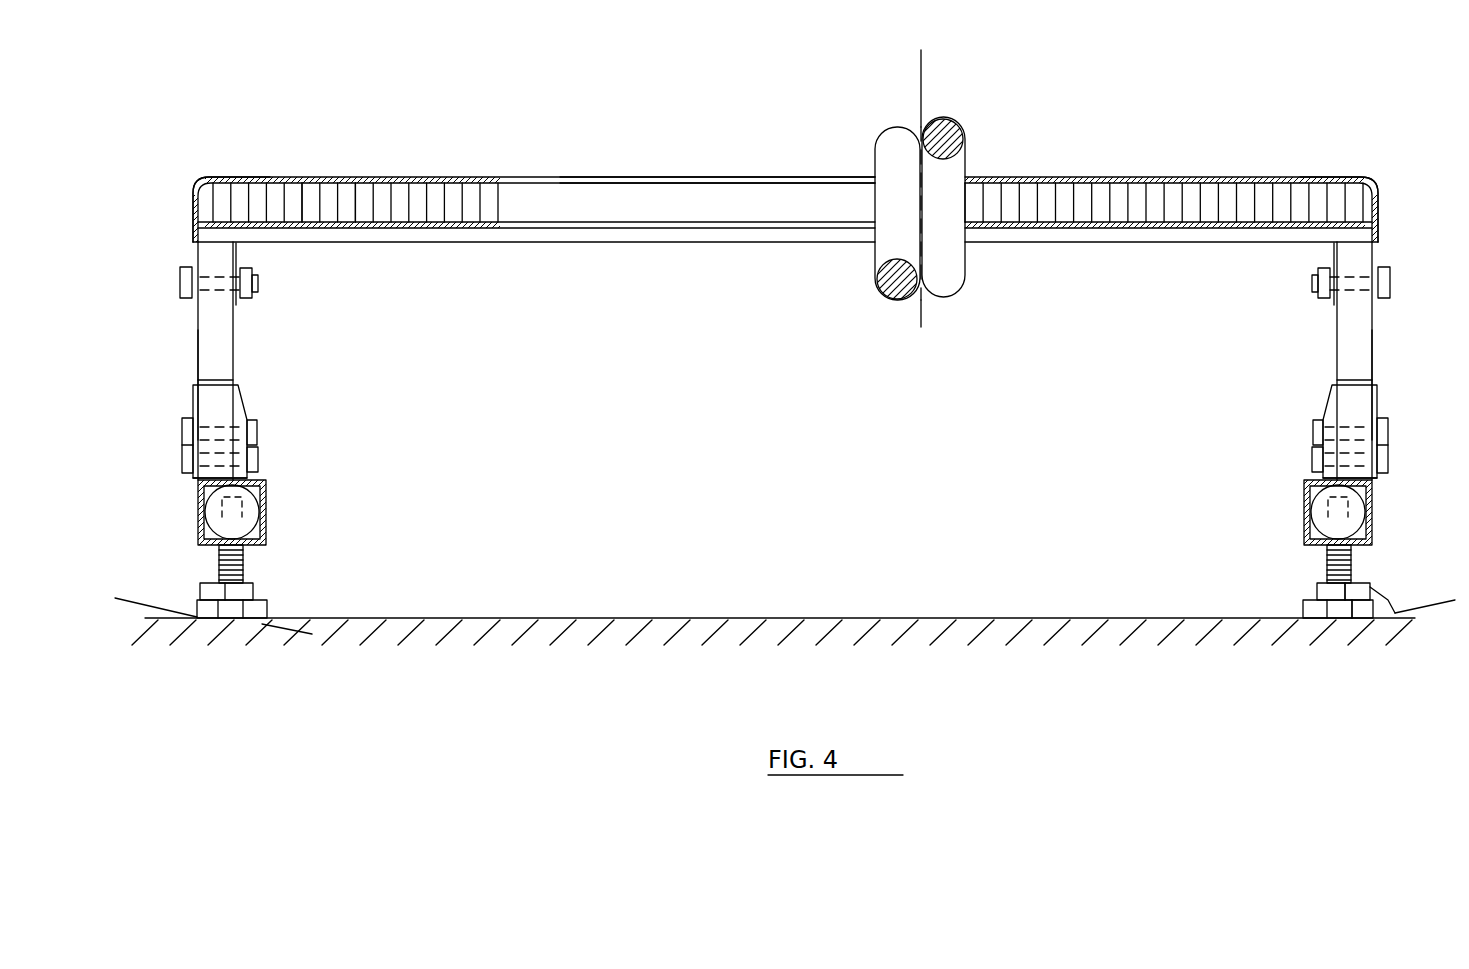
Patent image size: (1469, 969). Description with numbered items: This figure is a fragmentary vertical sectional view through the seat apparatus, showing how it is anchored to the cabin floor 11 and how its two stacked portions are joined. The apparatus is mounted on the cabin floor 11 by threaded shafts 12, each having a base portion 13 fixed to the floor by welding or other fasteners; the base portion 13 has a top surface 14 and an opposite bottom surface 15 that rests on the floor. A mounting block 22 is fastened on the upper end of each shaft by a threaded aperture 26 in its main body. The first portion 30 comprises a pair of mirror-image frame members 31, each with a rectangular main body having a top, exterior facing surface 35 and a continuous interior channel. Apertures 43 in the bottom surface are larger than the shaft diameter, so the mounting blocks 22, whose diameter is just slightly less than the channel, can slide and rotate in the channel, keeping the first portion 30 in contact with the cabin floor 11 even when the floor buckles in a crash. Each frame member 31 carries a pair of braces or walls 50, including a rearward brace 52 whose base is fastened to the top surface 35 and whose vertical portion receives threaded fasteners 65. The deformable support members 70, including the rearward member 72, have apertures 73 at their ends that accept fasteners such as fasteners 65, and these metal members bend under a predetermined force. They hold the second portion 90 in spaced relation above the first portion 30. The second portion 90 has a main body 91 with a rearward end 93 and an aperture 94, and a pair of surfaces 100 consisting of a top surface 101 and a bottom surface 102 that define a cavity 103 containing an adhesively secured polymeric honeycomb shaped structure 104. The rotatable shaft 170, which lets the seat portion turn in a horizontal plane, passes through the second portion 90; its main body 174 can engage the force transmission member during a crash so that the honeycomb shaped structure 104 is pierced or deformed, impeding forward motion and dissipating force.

The cabin floor 11 is at (787, 618).
The threaded shaft 12 is at (1330, 570).
The base portion 13 is at (267, 598).
The top surface 14 is at (1360, 586).
The bottom surface 15 is at (1357, 620).
The mounting block 22 is at (247, 508).
The threaded aperture 26 is at (267, 517).
The first portion 30 is at (288, 475).
The frame member 31 is at (200, 507).
The top, exterior facing surface 35 is at (215, 467).
The aperture 43 is at (218, 547).
The pair of braces or walls 50 is at (176, 381).
The rearward brace or wall 52 is at (245, 418).
The threaded fastener 65 is at (256, 433).
The deformable support member 70 is at (246, 343).
The rearward member 72 is at (218, 362).
The aperture 73 is at (216, 300).
The second portion 90 is at (420, 162).
The main body 91 is at (492, 177).
The rearward end 93 is at (1340, 180).
The aperture 94 is at (680, 170).
The pair of surfaces 100 is at (1070, 222).
The top surface 101 is at (300, 177).
The bottom surface 102 is at (350, 177).
The cavity 103 is at (523, 177).
The honeycomb shaped structure 104 is at (262, 177).
The rotatable shaft 170 is at (968, 158).
The main body 174 is at (895, 185).